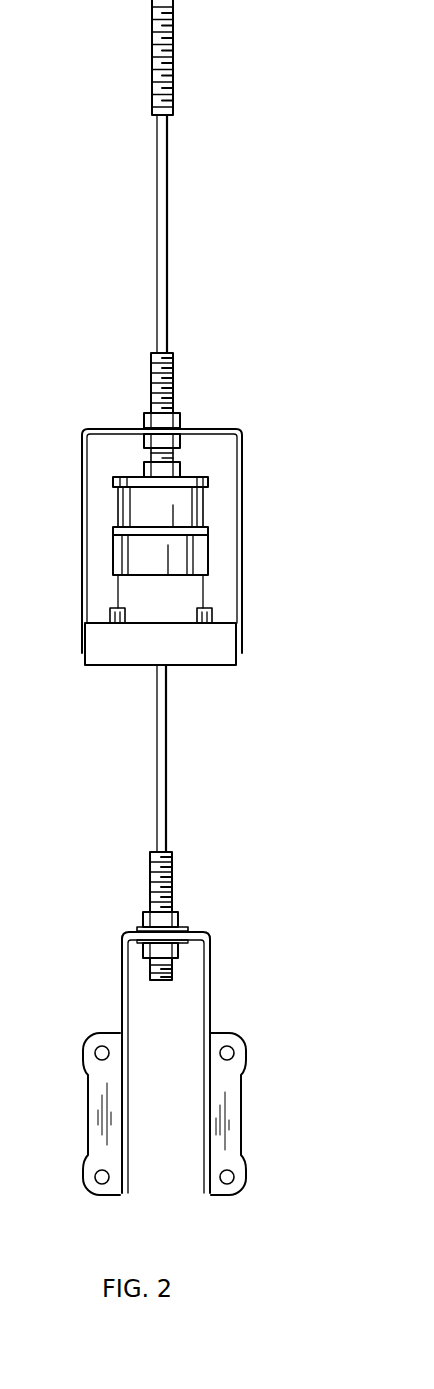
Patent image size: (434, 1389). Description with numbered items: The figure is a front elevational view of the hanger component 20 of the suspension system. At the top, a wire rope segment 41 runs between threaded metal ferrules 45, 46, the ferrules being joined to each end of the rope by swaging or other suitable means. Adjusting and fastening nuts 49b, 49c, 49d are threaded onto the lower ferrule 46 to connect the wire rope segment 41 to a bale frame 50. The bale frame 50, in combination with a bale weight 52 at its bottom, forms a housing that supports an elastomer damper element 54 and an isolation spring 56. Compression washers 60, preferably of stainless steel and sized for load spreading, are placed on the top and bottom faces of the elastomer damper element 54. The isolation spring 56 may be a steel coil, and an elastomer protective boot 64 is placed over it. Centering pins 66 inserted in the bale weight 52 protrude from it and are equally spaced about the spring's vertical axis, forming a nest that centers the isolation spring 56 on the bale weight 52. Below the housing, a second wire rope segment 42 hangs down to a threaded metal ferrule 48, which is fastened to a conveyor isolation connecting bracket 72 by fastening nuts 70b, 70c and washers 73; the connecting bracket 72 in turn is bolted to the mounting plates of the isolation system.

The hanger component 20 is at (226, 309).
The wire rope segment 41 is at (168, 197).
The wire rope segment 42 is at (166, 732).
The threaded metal ferrule 45 is at (173, 33).
The threaded metal ferrule 46 is at (151, 360).
The threaded metal ferrule 48 is at (150, 880).
The adjusting and fastening nut 49b is at (180, 470).
The adjusting and fastening nut 49c is at (144, 440).
The adjusting and fastening nut 49d is at (180, 418).
The bale frame 50 is at (82, 560).
The bale weight 52 is at (115, 666).
The elastomer damper element 54 is at (118, 510).
The isolation spring 56 is at (203, 592).
The compression washer 60 is at (208, 482).
The elastomer protective boot 64 is at (208, 555).
The centering pin 66 is at (197, 617).
The fastening nut 70b is at (178, 918).
The fastening nut 70c is at (178, 950).
The conveyor isolation connecting bracket 72 is at (243, 1089).
The washer 73 is at (137, 929).